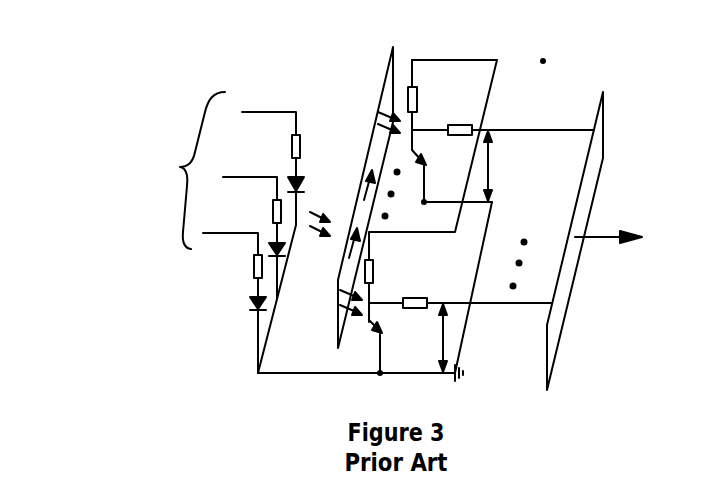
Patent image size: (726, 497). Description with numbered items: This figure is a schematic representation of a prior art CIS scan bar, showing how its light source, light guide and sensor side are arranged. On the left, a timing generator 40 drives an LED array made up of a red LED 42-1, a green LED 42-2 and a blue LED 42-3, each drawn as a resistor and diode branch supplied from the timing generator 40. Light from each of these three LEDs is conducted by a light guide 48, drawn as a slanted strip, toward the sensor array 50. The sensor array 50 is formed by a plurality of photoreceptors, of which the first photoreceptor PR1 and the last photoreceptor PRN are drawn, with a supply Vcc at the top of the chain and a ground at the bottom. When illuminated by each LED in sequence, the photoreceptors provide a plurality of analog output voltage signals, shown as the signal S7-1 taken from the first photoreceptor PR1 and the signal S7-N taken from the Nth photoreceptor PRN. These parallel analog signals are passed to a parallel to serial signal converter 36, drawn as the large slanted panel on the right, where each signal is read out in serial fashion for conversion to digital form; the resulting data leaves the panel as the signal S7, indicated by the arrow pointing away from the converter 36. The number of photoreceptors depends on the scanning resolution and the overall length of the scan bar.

The timing generator 40 is at (172, 182).
The red LED 42-1 is at (258, 291).
The green LED 42-2 is at (277, 236).
The blue LED 42-3 is at (296, 168).
The light guide 48 is at (362, 178).
The parallel to serial signal converter 36 is at (603, 92).
The sensor array 50 is at (472, 38).
The photoreceptor PRN is at (417, 130).
The photoreceptor PR1 is at (372, 303).
The analog output voltage signal S7-N is at (488, 173).
The analog output voltage signal S7-1 is at (443, 345).
The signal S7 is at (598, 237).
The supply voltage Vcc is at (457, 156).